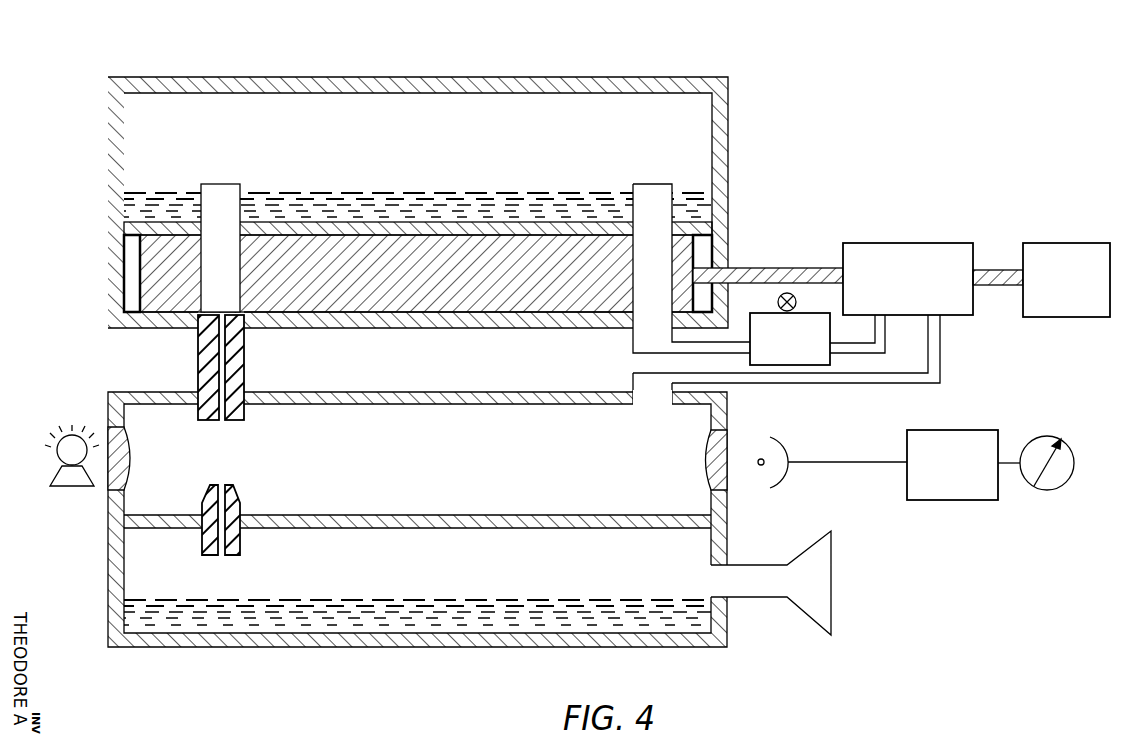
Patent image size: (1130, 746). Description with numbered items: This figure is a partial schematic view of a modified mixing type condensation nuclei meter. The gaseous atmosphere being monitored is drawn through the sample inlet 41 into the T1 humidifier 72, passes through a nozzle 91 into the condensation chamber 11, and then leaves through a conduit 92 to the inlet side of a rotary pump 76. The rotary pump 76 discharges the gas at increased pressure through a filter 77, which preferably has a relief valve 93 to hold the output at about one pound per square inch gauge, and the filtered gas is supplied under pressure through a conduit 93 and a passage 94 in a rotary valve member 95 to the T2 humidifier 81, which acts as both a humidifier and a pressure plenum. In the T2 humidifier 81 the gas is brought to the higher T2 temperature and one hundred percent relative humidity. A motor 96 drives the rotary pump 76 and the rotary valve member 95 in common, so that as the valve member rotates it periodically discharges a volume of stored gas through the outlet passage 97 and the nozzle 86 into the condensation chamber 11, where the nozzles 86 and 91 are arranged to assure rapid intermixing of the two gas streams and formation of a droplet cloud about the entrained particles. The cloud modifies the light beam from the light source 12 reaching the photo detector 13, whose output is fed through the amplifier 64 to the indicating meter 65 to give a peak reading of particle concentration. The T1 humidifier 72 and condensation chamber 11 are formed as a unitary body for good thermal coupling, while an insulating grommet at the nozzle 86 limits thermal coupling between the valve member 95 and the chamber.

The condensation chamber 11 is at (480, 392).
The light source 12 is at (58, 447).
The photo detector device 13 is at (788, 448).
The sample inlet 41 is at (805, 547).
The amplifier 64 is at (975, 430).
The indicating meter 65 is at (1075, 462).
The T1 humidifier 72 is at (385, 647).
The rotary pump 76 is at (880, 243).
The filter 77 is at (828, 310).
The T2 humidifier 81 is at (455, 78).
The nozzle 86 is at (198, 355).
The nozzle 91 is at (290, 494).
The conduit 92 is at (866, 383).
The conduit 93 is at (633, 345).
The passage 94 is at (633, 272).
The rotary valve member 95 is at (140, 275).
The motor 96 is at (1077, 243).
The outlet passage 97 is at (201, 268).